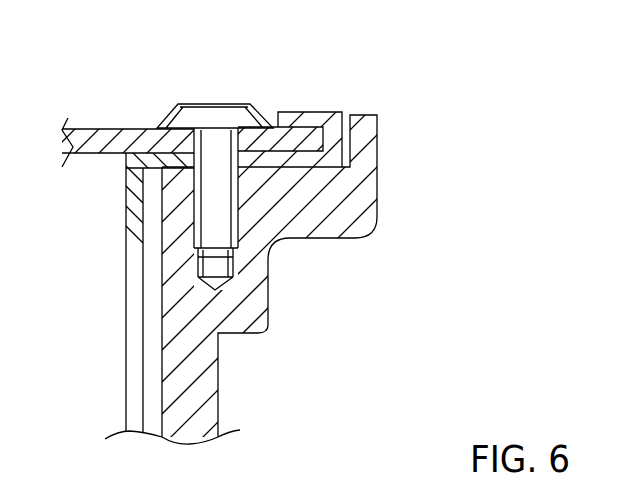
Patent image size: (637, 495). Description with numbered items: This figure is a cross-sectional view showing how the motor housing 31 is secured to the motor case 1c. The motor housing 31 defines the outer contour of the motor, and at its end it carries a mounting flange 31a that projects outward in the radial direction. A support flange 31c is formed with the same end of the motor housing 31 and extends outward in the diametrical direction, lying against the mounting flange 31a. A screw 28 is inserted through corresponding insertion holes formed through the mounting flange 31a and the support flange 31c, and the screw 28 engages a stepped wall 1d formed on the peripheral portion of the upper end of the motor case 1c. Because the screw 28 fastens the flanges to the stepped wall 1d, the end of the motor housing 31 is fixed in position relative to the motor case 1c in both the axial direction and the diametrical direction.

The motor case 1c is at (363, 163).
The stepped wall 1d is at (278, 183).
The screw 28 is at (176, 103).
The motor housing 31 is at (133, 205).
The mounting flange 31a is at (95, 140).
The support flange 31c is at (272, 122).